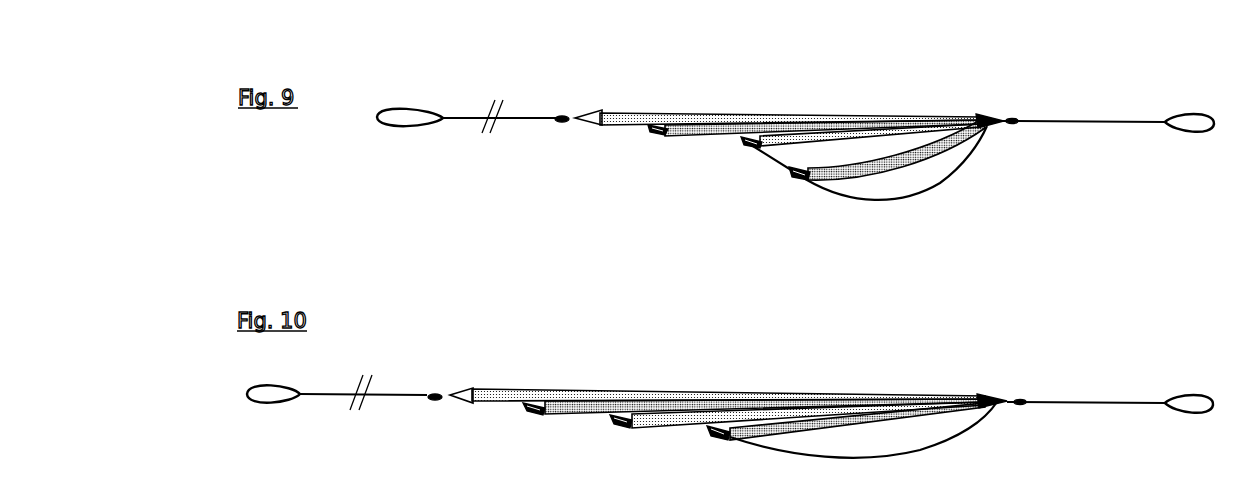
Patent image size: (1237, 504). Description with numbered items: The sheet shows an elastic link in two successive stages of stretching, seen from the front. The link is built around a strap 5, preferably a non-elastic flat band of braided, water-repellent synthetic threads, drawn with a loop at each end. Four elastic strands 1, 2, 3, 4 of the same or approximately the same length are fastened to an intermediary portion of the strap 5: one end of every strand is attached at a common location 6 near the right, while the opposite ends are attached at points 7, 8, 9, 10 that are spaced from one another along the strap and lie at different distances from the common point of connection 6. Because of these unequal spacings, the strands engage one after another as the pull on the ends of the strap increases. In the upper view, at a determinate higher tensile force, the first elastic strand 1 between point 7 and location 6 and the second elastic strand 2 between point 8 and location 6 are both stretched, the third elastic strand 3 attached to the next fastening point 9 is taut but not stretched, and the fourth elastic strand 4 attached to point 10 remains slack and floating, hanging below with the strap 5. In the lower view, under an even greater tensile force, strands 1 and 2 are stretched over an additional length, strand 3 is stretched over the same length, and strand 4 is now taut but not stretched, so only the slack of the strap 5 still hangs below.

In FIG. 9, the first elastic strand 1 is at (722, 115).
In FIG. 10, the first elastic strand 1 is at (607, 392).
In FIG. 9, the second elastic strand 2 is at (805, 122).
In FIG. 10, the second elastic strand 2 is at (685, 402).
In FIG. 9, the third elastic strand 3 is at (857, 125).
In FIG. 10, the third elastic strand 3 is at (738, 408).
In FIG. 9, the fourth elastic strand 4 is at (912, 160).
In FIG. 10, the fourth elastic strand 4 is at (795, 420).
In FIG. 9, the strap 5 is at (1107, 127).
In FIG. 10, the strap 5 is at (1108, 405).
In FIG. 9, the common location 6 is at (995, 123).
In FIG. 10, the common location 6 is at (997, 398).
In FIG. 9, the fastening point 7 is at (584, 110).
In FIG. 10, the fastening point 7 is at (463, 388).
In FIG. 9, the fastening point 8 is at (655, 132).
In FIG. 10, the fastening point 8 is at (527, 412).
In FIG. 9, the fastening point 9 is at (743, 145).
In FIG. 10, the fastening point 9 is at (617, 422).
In FIG. 9, the fastening point 10 is at (792, 175).
In FIG. 10, the fastening point 10 is at (710, 430).